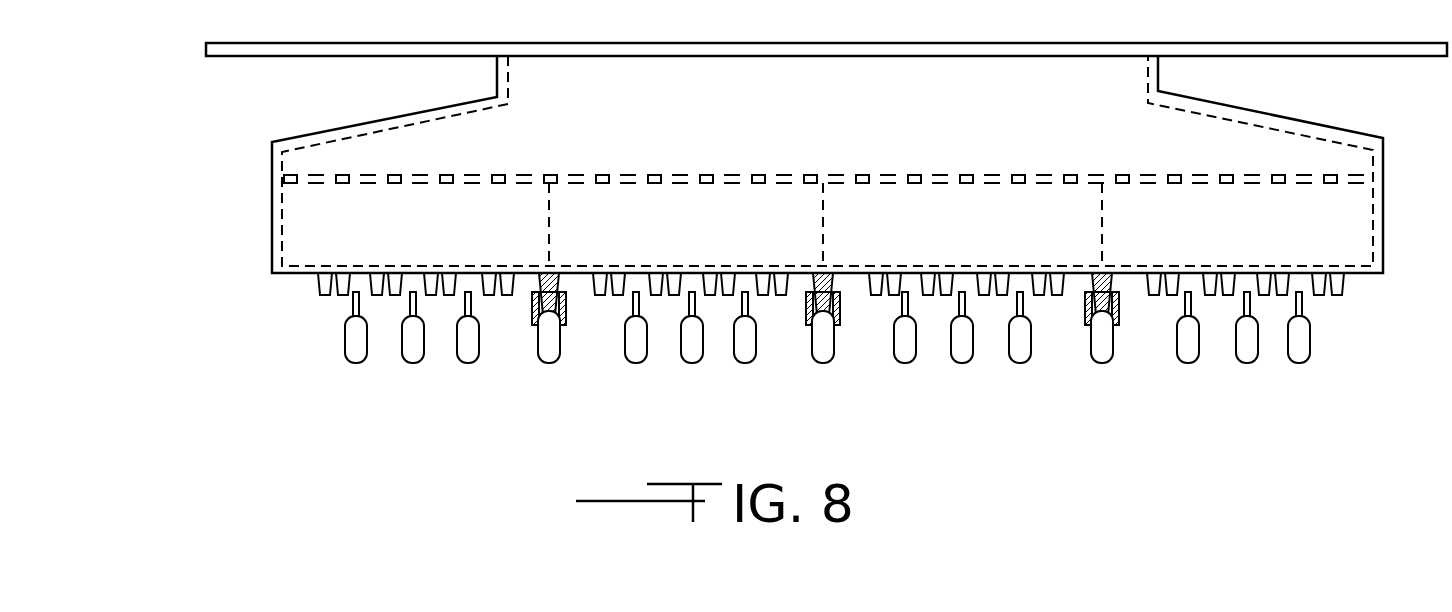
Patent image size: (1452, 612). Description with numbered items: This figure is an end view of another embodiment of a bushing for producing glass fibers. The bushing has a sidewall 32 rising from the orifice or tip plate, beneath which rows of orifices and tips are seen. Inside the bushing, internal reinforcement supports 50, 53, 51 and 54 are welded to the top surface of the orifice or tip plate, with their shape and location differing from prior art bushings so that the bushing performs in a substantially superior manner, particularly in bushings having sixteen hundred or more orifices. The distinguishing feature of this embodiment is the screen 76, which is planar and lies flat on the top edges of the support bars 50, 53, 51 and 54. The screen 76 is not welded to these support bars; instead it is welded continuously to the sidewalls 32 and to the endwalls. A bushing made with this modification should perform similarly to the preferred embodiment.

The sidewall 32 is at (272, 222).
The internal reinforcement support 50 is at (474, 222).
The screen 76 is at (553, 185).
The internal reinforcement support 53 is at (707, 220).
The internal reinforcement support 51 is at (993, 220).
The internal reinforcement support 54 is at (1153, 212).